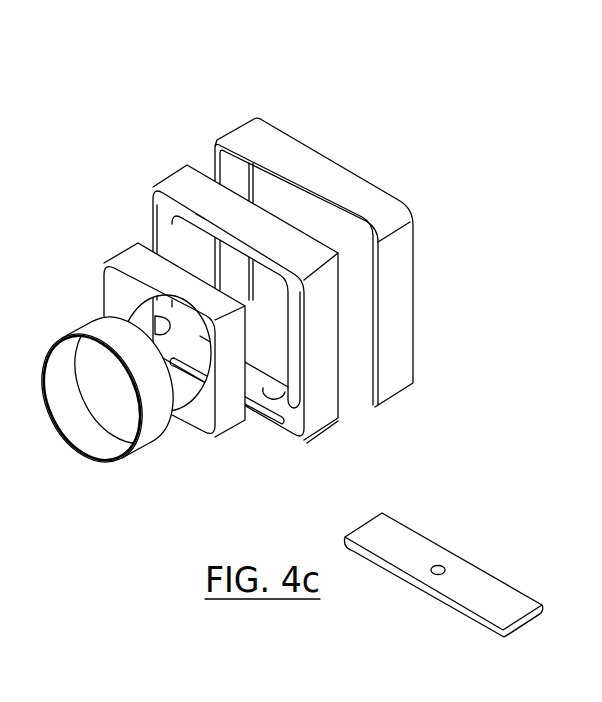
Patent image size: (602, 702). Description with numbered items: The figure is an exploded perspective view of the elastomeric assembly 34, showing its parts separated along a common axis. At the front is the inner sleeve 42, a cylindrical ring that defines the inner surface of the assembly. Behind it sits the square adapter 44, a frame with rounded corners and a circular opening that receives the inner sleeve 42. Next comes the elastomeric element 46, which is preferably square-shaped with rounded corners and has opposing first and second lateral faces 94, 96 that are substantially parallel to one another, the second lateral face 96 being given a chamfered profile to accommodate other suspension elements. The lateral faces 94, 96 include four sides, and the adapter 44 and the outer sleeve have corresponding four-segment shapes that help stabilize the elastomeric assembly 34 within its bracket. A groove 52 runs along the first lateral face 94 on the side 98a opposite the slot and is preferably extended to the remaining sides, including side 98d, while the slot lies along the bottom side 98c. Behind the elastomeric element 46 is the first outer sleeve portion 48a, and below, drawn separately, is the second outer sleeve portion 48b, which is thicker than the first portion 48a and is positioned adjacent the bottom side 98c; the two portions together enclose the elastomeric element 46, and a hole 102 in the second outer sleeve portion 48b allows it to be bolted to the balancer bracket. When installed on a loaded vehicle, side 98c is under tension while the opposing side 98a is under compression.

The elastomeric assembly 34 is at (129, 146).
The inner sleeve 42 is at (152, 420).
The square adapter 44 is at (232, 383).
The elastomeric element 46 is at (250, 295).
The first outer sleeve portion 48a is at (397, 366).
The second outer sleeve portion 48b is at (469, 562).
The groove 52 is at (242, 247).
The first lateral face 94 is at (288, 422).
The second lateral face 96 is at (297, 345).
The side 98a is at (203, 225).
The bottom side 98c is at (273, 412).
The side 98d is at (165, 243).
The hole 102 is at (438, 564).